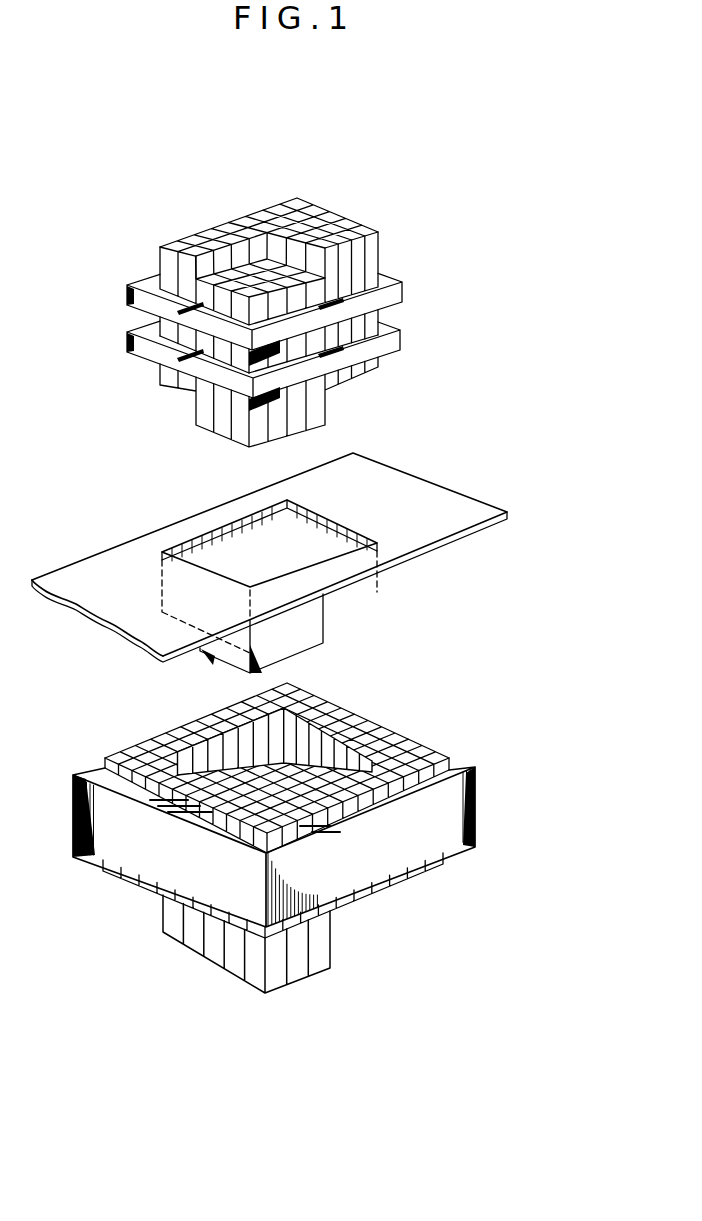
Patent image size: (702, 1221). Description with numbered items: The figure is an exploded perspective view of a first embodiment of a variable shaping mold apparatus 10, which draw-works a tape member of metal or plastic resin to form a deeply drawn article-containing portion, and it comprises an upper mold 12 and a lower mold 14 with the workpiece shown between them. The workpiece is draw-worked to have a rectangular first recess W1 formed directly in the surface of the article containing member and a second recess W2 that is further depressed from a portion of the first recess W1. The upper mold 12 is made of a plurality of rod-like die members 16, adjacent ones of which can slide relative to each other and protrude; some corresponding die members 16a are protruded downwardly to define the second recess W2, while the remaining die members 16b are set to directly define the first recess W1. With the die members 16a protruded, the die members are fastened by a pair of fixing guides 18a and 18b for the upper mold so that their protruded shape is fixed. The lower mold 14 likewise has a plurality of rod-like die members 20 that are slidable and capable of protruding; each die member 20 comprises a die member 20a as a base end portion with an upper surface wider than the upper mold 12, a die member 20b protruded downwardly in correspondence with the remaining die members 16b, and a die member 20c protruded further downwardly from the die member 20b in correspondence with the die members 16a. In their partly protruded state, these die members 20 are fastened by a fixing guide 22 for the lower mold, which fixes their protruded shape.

The shaping mold apparatus 10 is at (540, 1020).
The upper mold 12 is at (363, 210).
The lower mold 14 is at (440, 733).
The die members 16 is at (298, 194).
The die members 16a is at (223, 427).
The remaining die members 16b is at (228, 222).
The fixing guide 18a is at (383, 287).
The fixing guide 18b is at (400, 345).
The die members 20 is at (363, 713).
The die member 20a is at (187, 727).
The die member 20b is at (373, 917).
The die member 20c is at (308, 963).
The fixing guide 22 is at (463, 807).
The first recess W1 is at (317, 528).
The second recess W2 is at (310, 620).